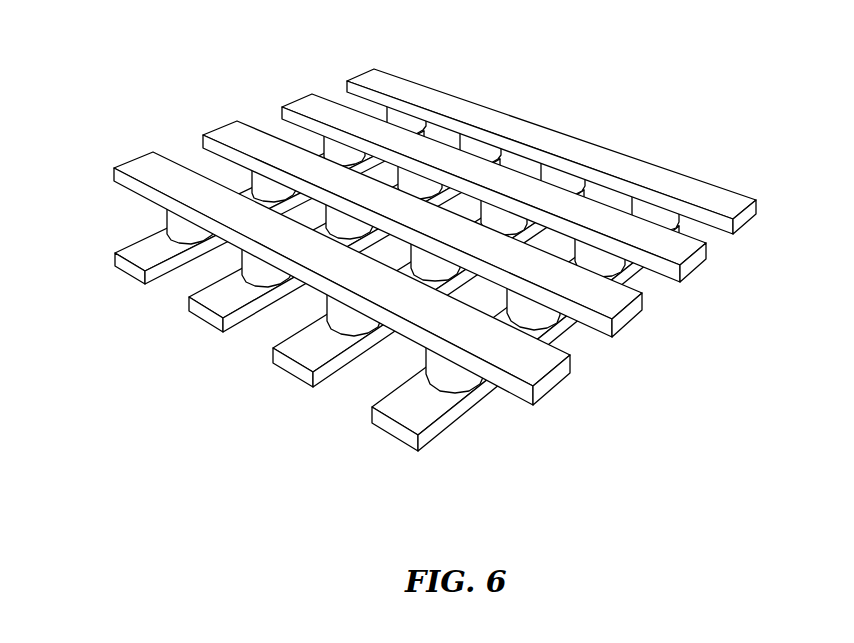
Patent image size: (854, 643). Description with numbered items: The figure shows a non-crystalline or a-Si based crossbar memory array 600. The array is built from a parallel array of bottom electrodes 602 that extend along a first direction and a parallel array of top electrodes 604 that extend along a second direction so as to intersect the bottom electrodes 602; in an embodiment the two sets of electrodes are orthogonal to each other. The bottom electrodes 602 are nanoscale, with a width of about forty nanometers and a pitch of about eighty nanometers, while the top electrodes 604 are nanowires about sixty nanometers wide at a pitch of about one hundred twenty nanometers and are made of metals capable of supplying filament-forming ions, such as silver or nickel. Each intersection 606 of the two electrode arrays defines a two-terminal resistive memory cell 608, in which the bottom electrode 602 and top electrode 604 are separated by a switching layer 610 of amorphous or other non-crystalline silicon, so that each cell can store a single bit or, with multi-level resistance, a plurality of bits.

The crossbar memory array 600 is at (435, 250).
The bottom electrodes 602 is at (388, 437).
The top electrodes 604 is at (562, 383).
The intersection 606 is at (463, 403).
The two-terminal resistive memory cell 608 is at (423, 278).
The switching layer 610 is at (423, 278).